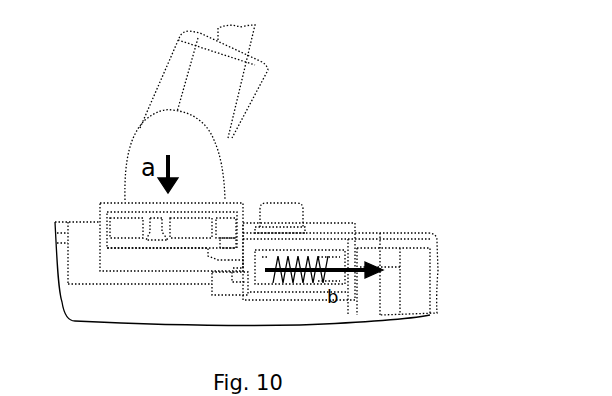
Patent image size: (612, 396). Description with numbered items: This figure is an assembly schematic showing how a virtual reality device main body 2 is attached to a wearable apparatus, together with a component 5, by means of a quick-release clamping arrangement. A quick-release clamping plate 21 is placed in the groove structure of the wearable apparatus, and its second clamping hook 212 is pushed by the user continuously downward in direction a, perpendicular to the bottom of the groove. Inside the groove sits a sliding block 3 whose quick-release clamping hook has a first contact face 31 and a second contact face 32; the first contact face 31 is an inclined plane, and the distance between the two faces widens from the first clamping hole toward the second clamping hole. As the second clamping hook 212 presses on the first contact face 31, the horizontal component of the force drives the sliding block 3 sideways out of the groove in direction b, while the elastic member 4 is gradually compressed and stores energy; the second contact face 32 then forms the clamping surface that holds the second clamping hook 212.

The nozzle / hand-held cleaning attachment 2 is at (182, 145).
The locking button 5 is at (285, 215).
The quick-release clamping plate 21 is at (128, 243).
The second clamping hook 212 is at (225, 263).
The first contact face 31 is at (225, 263).
The second contact face 32 is at (235, 276).
The sliding block 3 is at (258, 270).
The elastic member 4 is at (297, 273).